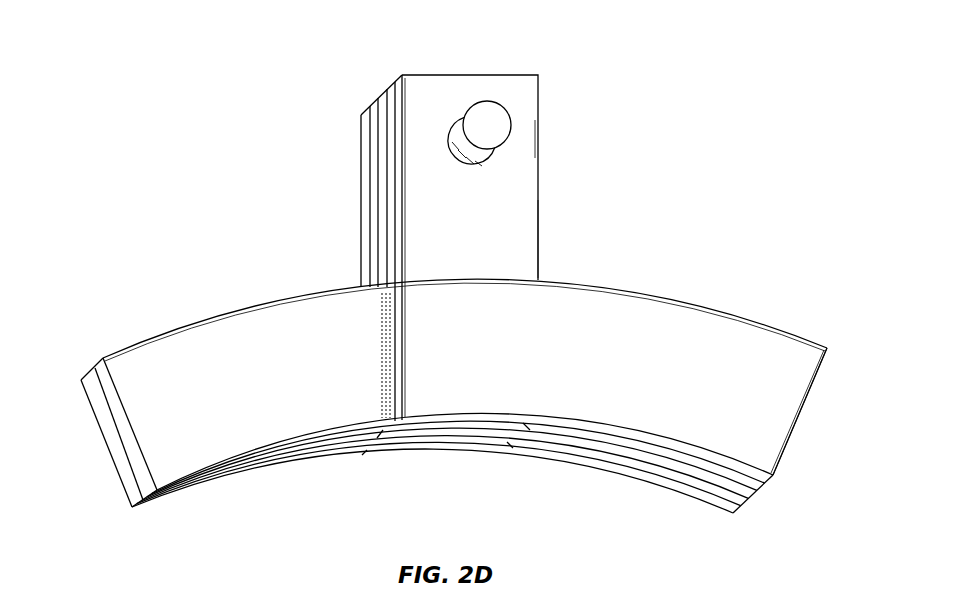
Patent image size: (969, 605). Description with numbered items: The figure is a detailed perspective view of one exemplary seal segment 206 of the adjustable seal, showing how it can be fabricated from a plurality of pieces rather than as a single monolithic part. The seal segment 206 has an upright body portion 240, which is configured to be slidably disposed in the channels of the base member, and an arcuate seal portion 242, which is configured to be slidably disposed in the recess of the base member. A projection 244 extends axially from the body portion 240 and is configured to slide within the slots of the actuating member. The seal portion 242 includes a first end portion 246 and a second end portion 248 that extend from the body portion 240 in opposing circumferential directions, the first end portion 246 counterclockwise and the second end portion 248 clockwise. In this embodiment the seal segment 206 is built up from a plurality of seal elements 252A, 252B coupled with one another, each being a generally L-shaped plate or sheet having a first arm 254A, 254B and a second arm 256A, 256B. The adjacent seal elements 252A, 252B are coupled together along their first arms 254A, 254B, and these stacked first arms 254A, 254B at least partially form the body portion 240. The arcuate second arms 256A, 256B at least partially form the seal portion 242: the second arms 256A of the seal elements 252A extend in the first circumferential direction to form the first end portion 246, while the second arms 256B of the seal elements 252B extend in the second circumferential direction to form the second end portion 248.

The seal segment 206 is at (156, 50).
The body portion 240 is at (551, 114).
The seal portion 242 is at (422, 468).
The projection 244 is at (497, 123).
The first end portion 246 is at (276, 483).
The second end portion 248 is at (577, 486).
The seal element 252A is at (388, 85).
The seal element 252B is at (377, 95).
The first arm 254A is at (390, 162).
The first arm 254B is at (380, 192).
The second arm 256A is at (143, 356).
The second arm 256B is at (730, 327).